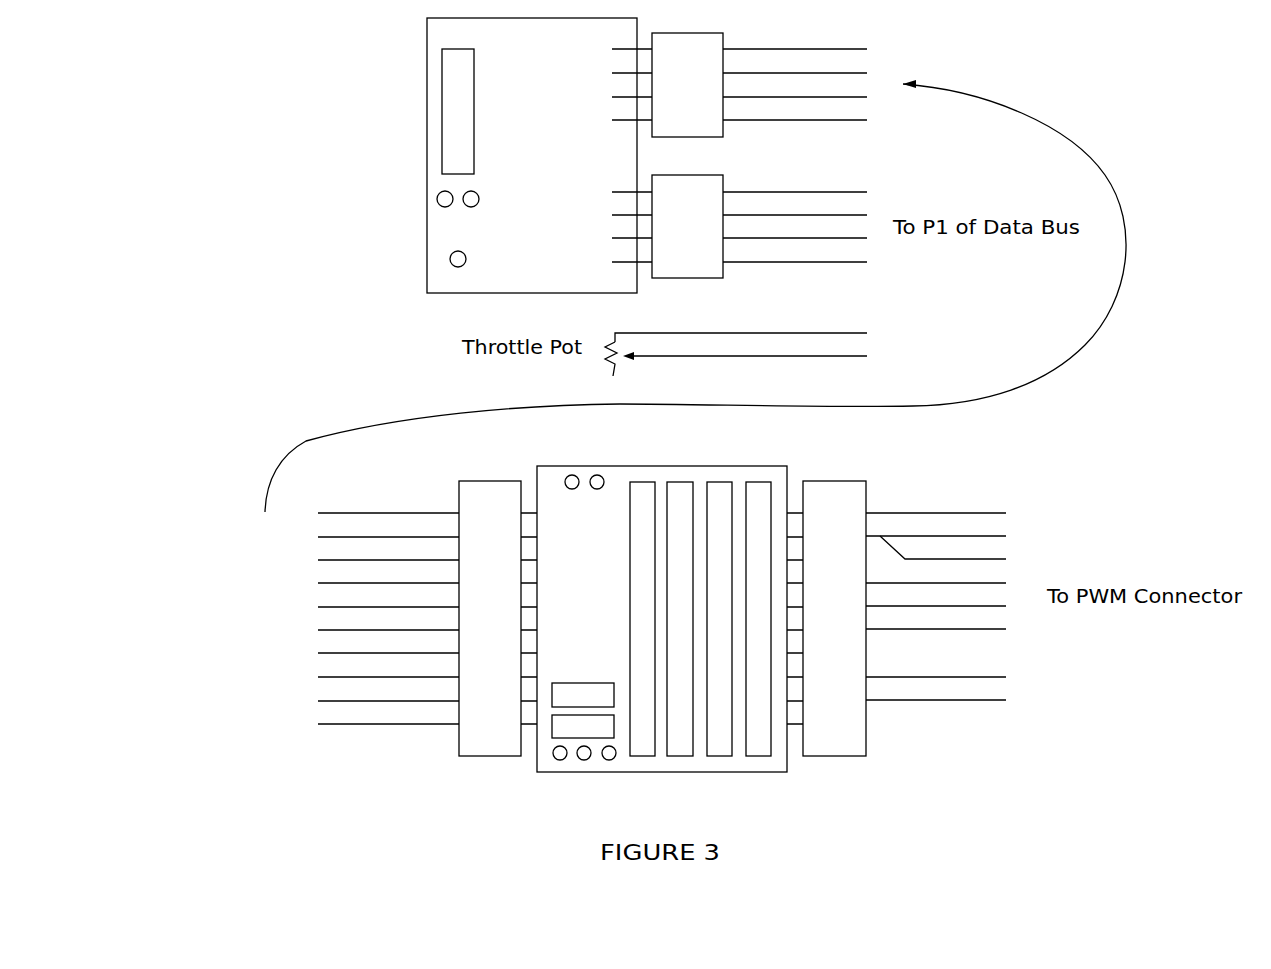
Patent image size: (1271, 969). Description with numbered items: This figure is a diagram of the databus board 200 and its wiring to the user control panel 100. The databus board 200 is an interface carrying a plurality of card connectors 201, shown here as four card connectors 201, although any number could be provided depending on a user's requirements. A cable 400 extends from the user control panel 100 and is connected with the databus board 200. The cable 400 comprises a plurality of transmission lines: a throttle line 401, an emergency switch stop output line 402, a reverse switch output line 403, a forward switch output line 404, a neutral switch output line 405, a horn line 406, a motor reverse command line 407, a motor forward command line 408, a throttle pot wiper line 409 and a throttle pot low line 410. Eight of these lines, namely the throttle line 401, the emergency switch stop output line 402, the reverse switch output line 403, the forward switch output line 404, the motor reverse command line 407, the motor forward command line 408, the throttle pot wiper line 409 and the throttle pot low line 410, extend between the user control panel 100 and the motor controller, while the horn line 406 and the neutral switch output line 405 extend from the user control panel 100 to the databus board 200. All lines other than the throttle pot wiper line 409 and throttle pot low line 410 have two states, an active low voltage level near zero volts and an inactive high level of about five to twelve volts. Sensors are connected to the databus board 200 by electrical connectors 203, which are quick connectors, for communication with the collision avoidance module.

The user control panel 100 is at (441, 33).
The databus board 200 is at (670, 628).
The card connectors 201 is at (756, 489).
The electrical connectors 203 is at (557, 731).
The cable 400 is at (885, 45).
The throttle line 401 is at (662, 330).
The emergency switch stop output line 402 is at (662, 412).
The reverse switch output line 403 is at (662, 412).
The forward switch output line 404 is at (662, 401).
The neutral switch output line 405 is at (592, 365).
The horn line 406 is at (592, 388).
The motor reverse command line 407 is at (662, 448).
The motor forward command line 408 is at (662, 353).
The throttle pot wiper line 409 is at (662, 413).
The throttle pot low line 410 is at (662, 436).